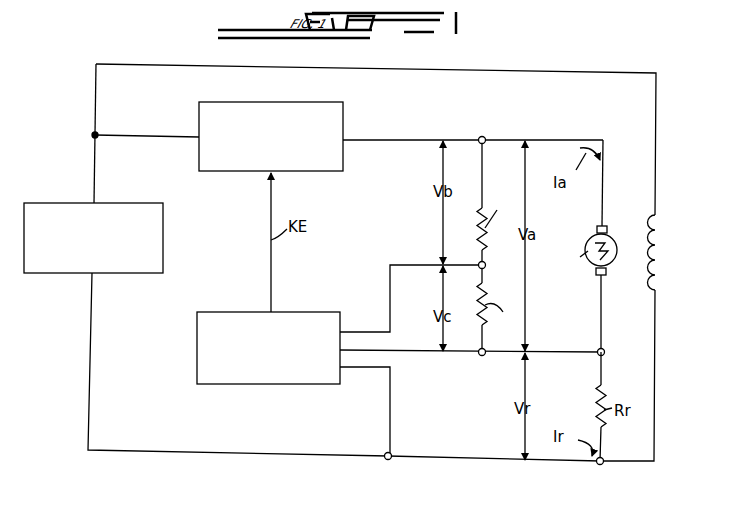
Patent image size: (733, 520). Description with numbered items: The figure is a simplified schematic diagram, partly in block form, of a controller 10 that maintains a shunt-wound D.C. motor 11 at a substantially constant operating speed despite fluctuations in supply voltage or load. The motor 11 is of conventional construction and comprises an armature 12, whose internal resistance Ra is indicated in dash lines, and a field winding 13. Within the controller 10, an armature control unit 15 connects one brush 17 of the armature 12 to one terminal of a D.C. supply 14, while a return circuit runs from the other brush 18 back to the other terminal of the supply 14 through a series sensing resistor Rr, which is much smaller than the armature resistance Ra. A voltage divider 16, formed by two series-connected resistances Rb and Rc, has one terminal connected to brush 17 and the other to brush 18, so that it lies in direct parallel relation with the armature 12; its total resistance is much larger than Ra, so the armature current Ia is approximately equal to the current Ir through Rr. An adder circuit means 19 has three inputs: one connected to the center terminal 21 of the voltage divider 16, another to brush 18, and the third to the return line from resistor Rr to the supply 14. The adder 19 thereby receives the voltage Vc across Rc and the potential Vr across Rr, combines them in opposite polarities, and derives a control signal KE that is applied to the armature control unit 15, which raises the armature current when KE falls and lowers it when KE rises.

The controller 10 is at (298, 440).
The shunt-wound D.C. motor 11 is at (629, 246).
The armature 12 is at (592, 266).
The field winding 13 is at (660, 262).
The D.C. supply 14 is at (62, 275).
The armature control unit 15 is at (343, 120).
The voltage divider 16 is at (486, 266).
The brush 17 is at (606, 226).
The brush 18 is at (606, 275).
The adder circuit means 19 is at (315, 312).
The center terminal 21 is at (482, 265).